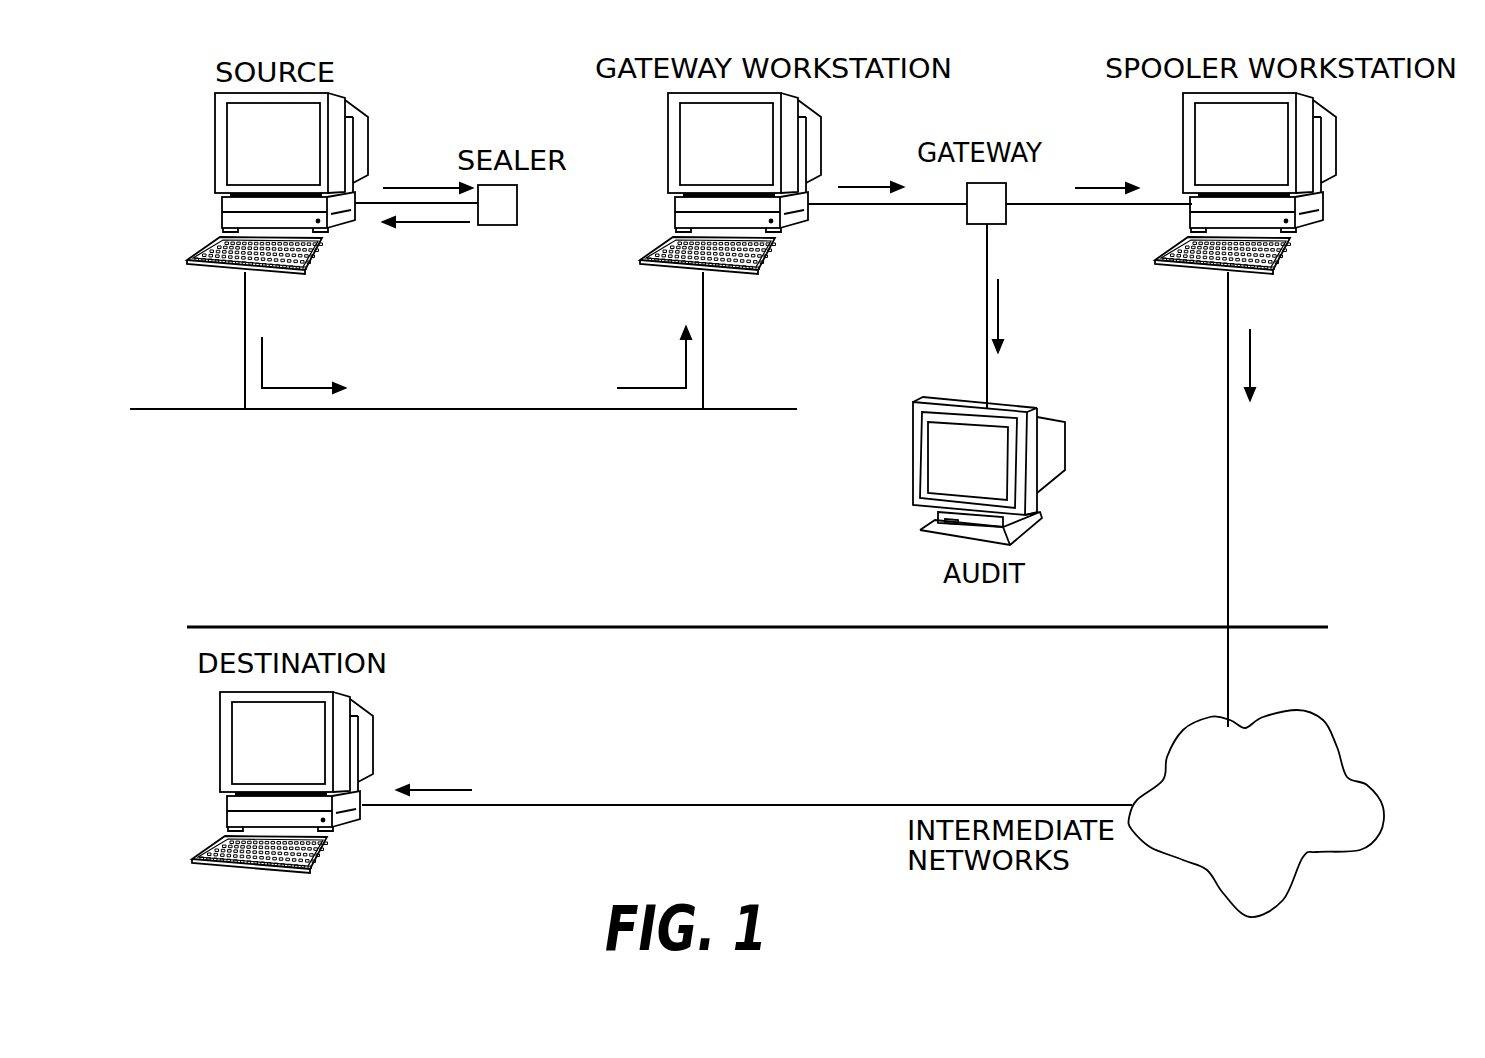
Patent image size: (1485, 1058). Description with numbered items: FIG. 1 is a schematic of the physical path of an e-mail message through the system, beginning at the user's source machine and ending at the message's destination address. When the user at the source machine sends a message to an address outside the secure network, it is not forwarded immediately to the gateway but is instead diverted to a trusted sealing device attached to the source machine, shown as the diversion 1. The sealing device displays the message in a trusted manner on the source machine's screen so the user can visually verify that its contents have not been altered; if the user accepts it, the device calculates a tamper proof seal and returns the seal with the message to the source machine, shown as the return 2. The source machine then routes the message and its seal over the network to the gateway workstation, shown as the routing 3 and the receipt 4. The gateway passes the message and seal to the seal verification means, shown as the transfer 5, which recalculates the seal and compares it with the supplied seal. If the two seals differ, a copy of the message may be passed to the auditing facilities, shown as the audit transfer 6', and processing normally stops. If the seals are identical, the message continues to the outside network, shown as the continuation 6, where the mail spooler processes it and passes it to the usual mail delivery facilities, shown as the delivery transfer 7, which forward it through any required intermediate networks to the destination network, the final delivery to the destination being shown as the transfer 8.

The diversion of message to trusted sealing device 1 is at (427, 170).
The return of sealed message to source machine 2 is at (426, 239).
The routing of message and seal from source toward gateway 3 is at (303, 365).
The receipt of message and seal at gateway workstation 4 is at (654, 357).
The passing of message and seal to seal verification means 5 is at (870, 172).
The continuation of message to outside network 6 is at (1106, 174).
The passing of message copy to auditing facilities 6' is at (1013, 315).
The passing of message to mail delivery facilities 7 is at (1262, 364).
The document delivery from intermediate networks to destination 8 is at (434, 776).